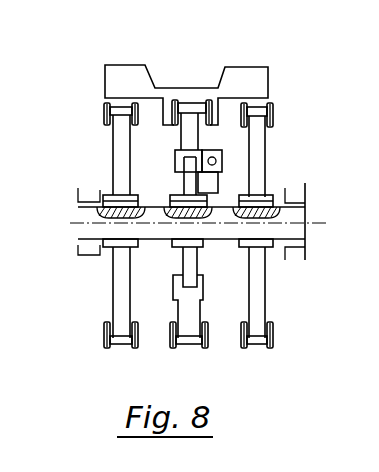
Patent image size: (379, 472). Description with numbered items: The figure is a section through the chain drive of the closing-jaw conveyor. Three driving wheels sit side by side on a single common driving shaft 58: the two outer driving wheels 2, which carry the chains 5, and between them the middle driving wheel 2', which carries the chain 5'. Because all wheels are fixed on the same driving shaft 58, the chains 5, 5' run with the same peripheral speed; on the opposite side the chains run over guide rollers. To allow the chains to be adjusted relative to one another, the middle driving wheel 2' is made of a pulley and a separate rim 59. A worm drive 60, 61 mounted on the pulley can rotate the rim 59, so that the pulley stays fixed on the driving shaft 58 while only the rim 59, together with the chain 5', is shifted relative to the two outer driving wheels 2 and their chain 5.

The driving wheel 2 is at (184, 297).
The middle driving wheel 2' is at (174, 297).
The chain 5 is at (176, 141).
The chain 5' is at (187, 75).
The driving shaft 58 is at (293, 235).
The rim 59 is at (190, 123).
The worm drive 60 is at (215, 158).
The worm drive 61 is at (188, 159).